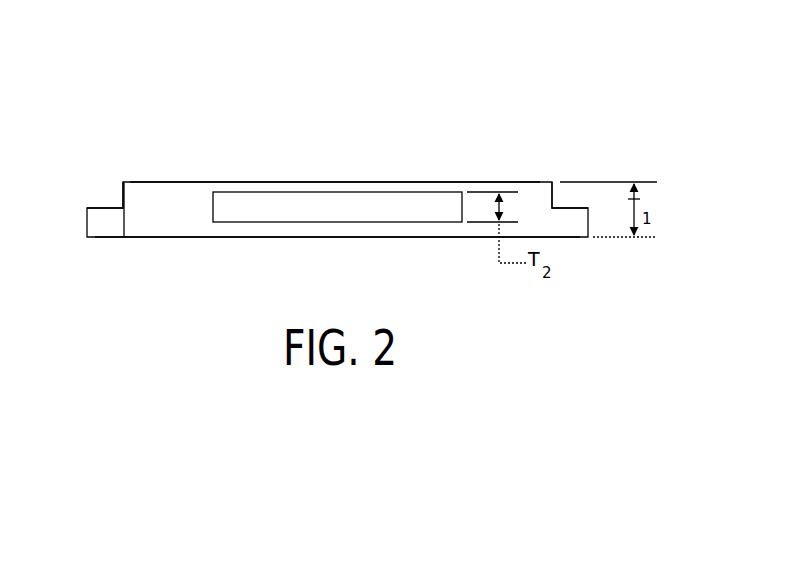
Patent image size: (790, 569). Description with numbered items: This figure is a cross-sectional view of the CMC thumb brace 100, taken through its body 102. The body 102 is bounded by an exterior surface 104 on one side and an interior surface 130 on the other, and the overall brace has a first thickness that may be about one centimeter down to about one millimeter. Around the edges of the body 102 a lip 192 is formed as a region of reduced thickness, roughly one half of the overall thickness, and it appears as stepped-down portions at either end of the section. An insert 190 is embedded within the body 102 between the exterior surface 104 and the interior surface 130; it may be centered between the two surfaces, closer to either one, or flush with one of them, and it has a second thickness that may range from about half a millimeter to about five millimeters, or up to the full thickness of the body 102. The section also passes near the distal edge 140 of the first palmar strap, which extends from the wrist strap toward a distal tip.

The brace 100 is at (662, 88).
The body 102 is at (367, 182).
The exterior surface 104 is at (248, 182).
The interior surface 130 is at (270, 237).
The distal edge 140 is at (160, 212).
The insert 190 is at (428, 212).
The lip 192 is at (103, 204).